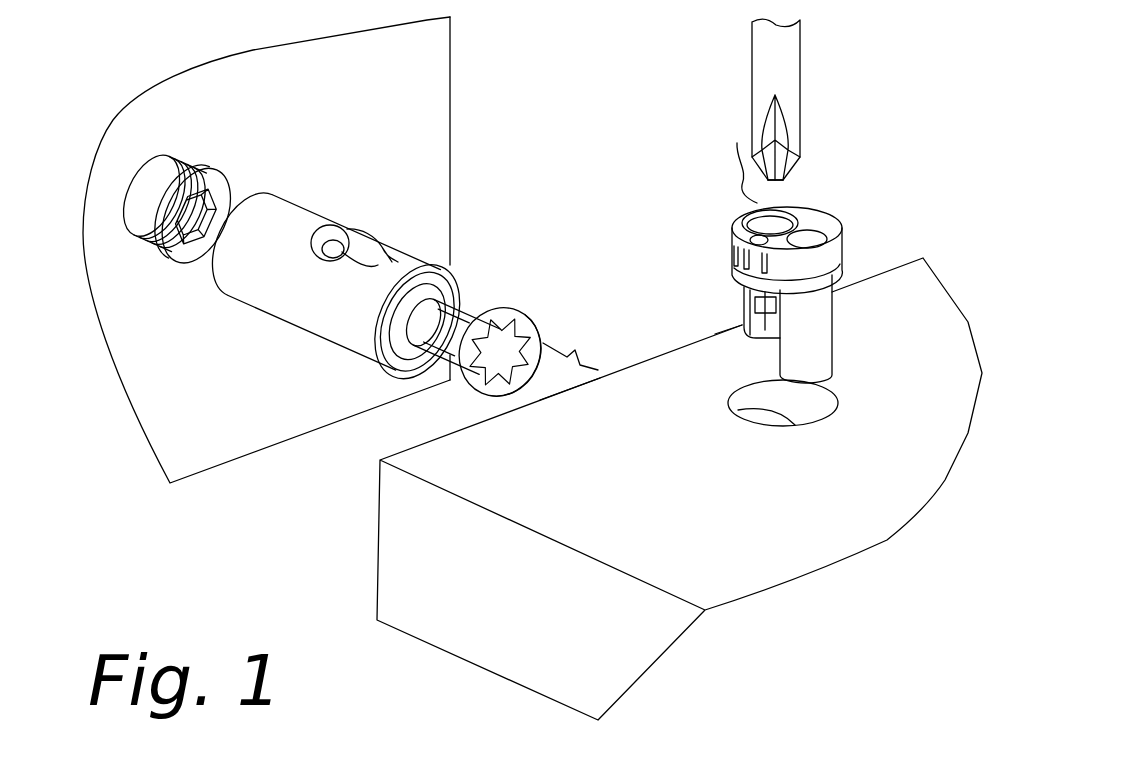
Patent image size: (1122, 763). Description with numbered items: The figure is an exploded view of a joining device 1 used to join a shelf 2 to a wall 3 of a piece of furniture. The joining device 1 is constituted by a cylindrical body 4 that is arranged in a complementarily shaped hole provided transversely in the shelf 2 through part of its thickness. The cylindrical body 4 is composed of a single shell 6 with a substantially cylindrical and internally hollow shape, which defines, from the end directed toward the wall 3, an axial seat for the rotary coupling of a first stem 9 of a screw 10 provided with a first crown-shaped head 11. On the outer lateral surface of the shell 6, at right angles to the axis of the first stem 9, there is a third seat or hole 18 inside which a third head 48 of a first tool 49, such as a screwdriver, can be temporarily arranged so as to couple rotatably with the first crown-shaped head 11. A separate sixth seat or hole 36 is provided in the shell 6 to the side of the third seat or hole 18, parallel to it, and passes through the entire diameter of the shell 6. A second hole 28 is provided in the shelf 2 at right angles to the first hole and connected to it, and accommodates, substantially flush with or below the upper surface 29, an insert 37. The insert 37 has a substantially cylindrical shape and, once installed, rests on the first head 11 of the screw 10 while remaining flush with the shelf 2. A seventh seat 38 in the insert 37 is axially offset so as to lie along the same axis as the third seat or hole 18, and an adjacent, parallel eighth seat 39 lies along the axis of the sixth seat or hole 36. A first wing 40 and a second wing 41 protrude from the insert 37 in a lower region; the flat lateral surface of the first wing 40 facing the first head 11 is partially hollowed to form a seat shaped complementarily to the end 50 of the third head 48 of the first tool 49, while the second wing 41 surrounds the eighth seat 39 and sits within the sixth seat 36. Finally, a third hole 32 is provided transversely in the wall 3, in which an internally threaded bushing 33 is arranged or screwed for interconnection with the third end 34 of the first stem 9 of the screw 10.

The joining device 1 is at (598, 132).
The shelf 2 is at (767, 568).
The wall 3 is at (265, 110).
The cylindrical body 4 is at (430, 237).
The shell 6 is at (252, 288).
The first stem 9 is at (435, 330).
The screw 10 is at (462, 303).
The first crown-shaped head 11 is at (513, 350).
The third seat or hole 18 is at (338, 243).
The second hole 28 is at (808, 400).
The upper surface 29 is at (600, 422).
The third hole 32 is at (165, 150).
The internally threaded bushing 33 is at (175, 257).
The third end 34 is at (380, 333).
The sixth seat or hole 36 is at (388, 260).
The insert 37 is at (735, 347).
The seventh seat 38 is at (762, 223).
The eighth seat 39 is at (815, 237).
The first wing 40 is at (747, 320).
The second wing 41 is at (812, 325).
The third head 48 is at (770, 132).
The first tool 49 is at (806, 53).
The end 50 is at (783, 181).